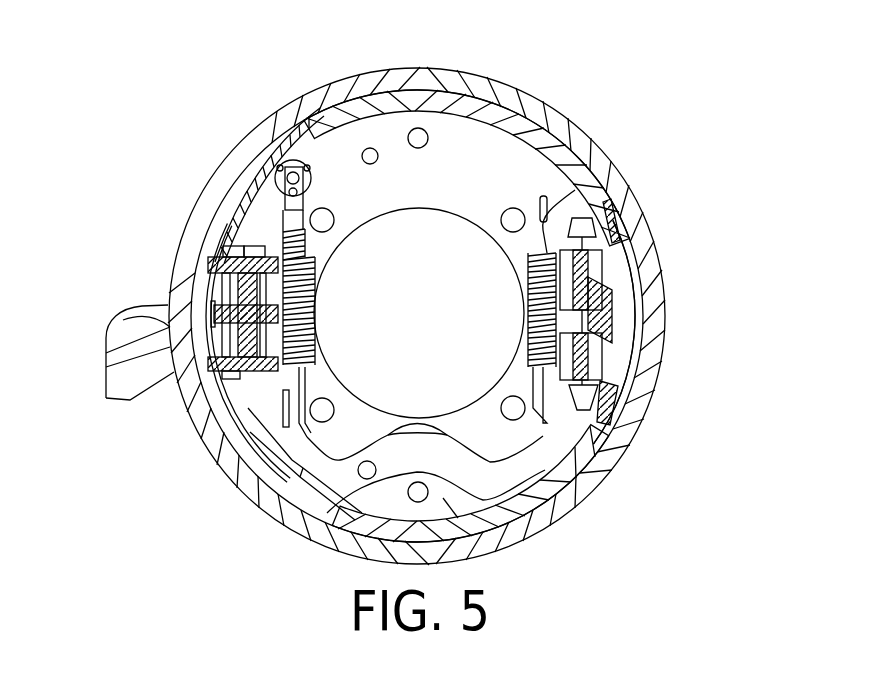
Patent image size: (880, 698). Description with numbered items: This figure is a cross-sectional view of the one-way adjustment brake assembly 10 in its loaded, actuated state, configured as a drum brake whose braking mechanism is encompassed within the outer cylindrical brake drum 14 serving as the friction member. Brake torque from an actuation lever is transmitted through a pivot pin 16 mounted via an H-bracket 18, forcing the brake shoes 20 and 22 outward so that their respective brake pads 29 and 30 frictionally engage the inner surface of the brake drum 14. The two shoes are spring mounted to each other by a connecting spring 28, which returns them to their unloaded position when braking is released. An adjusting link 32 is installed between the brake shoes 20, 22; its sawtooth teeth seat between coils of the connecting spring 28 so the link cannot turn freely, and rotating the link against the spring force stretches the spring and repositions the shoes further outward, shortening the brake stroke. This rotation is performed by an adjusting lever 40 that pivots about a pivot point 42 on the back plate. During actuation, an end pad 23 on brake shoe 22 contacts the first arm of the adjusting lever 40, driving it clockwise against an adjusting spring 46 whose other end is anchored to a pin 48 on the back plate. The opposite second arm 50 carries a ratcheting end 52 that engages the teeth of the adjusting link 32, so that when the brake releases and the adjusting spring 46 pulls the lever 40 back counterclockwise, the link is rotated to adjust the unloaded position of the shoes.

The brake assembly 10 is at (150, 112).
The brake drum 14 is at (387, 66).
The pivot pin 16 is at (214, 310).
The H-bracket 18 is at (218, 290).
The brake shoe 20 is at (540, 165).
The brake shoe 22 is at (478, 530).
The end pad 23 is at (127, 378).
The connecting spring 28 is at (606, 178).
The brake pad 29 is at (469, 78).
The brake pad 30 is at (550, 487).
The adjusting link 32 is at (597, 317).
The adjusting lever 40 is at (480, 477).
The pivot point 42 is at (363, 479).
The adjusting spring 46 is at (325, 240).
The pin 48 is at (297, 152).
The second arm 50 is at (567, 423).
The ratcheting end 52 is at (565, 362).